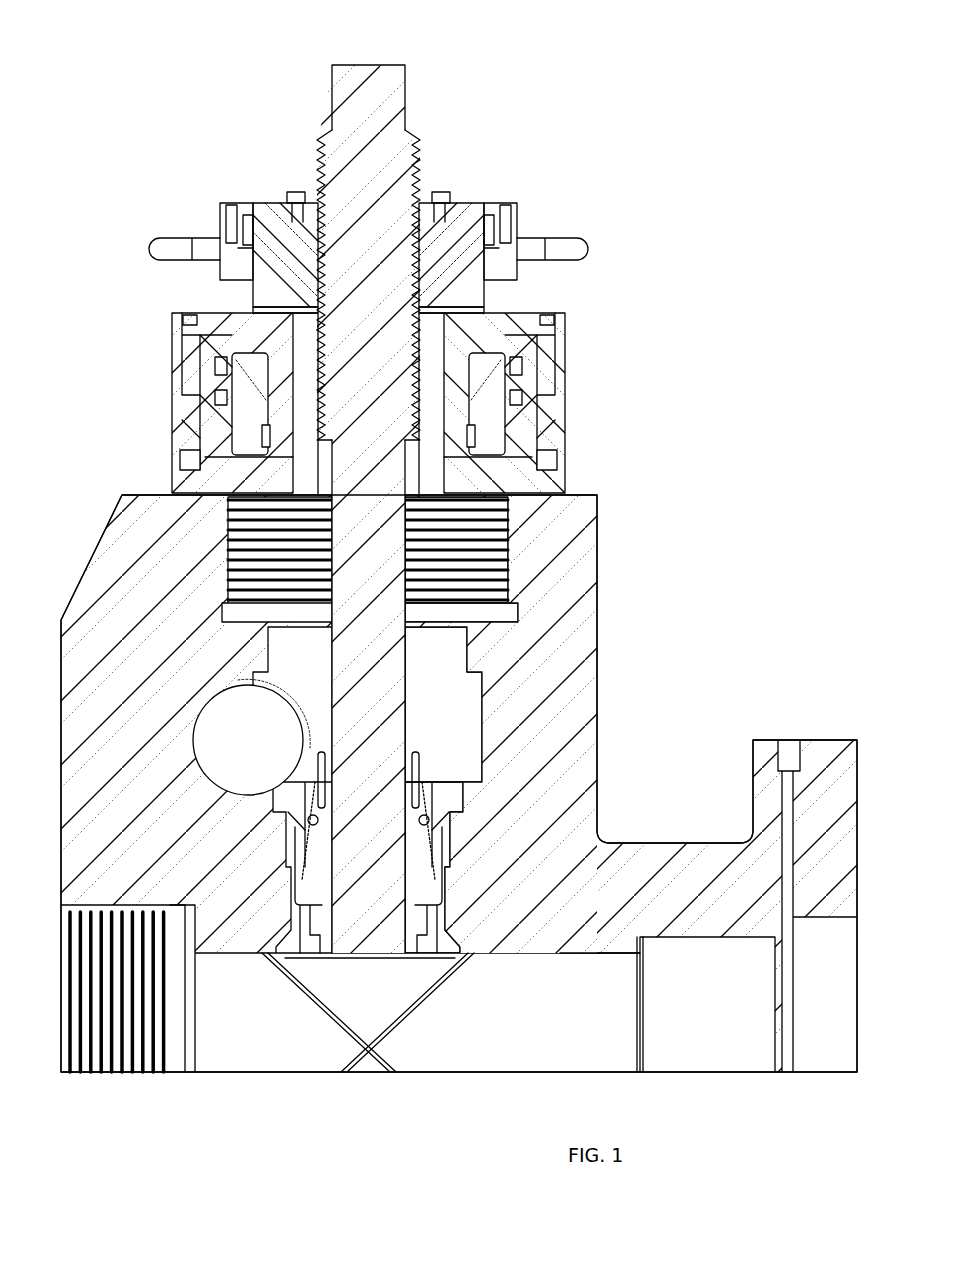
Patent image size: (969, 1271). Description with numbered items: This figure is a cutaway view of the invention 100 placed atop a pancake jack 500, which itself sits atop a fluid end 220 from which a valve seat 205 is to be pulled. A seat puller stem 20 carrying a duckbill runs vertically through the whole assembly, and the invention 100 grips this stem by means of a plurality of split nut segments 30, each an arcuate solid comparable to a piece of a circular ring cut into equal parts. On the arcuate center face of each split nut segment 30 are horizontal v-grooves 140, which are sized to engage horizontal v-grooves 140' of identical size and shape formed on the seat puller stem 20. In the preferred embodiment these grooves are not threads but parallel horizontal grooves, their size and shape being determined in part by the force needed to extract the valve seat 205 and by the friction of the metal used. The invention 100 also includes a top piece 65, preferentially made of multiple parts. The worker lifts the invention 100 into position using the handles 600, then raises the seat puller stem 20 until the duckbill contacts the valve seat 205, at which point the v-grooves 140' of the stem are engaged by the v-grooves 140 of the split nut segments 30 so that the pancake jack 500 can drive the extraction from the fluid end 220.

The seat puller stem 20 is at (410, 83).
The split nut segment 30 is at (297, 232).
The top piece 65 is at (218, 210).
The invention 100 is at (600, 205).
The horizontal v-grooves 140 is at (228, 230).
The horizontal v-grooves 140' is at (235, 385).
The pancake jack 500 is at (572, 405).
The handles 600 is at (590, 247).
The fluid end 220 is at (603, 581).
The valve seat 205 is at (460, 780).